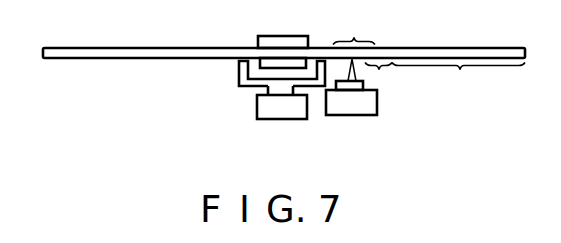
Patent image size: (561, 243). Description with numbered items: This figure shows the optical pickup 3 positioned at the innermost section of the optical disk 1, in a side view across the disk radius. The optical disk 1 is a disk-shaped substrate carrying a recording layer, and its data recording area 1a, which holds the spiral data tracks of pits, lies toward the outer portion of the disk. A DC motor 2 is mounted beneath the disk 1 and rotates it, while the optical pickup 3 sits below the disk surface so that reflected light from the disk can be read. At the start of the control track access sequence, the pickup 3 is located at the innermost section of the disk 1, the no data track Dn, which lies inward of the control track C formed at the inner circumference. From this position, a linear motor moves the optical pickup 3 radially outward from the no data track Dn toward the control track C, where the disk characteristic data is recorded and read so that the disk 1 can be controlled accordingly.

The optical disk 1 is at (487, 48).
The data recording area 1a is at (458, 80).
The DC motor 2 is at (257, 102).
The optical pickup 3 is at (377, 106).
The no data track Dn is at (354, 28).
The control track C is at (378, 78).